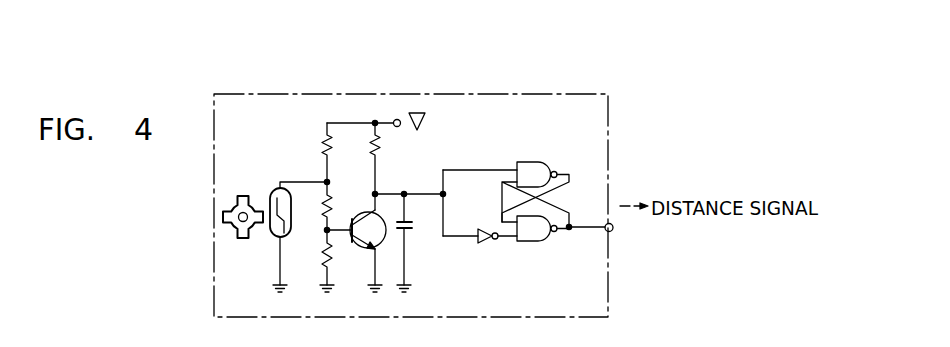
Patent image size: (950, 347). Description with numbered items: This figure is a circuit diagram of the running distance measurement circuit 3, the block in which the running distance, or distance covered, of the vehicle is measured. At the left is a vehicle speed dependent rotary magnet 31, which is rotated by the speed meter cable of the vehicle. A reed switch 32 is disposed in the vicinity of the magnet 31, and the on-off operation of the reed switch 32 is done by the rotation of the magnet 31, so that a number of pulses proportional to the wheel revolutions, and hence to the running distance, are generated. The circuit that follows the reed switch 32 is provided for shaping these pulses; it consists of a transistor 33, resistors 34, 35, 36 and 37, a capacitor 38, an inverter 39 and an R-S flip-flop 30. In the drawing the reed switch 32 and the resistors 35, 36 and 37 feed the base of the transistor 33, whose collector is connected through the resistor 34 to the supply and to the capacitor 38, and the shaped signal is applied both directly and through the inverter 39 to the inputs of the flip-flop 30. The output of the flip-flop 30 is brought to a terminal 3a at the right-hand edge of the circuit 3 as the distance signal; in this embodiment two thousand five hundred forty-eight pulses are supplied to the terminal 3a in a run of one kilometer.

The running distance measurement circuit 3 is at (525, 93).
The terminal 3a is at (614, 228).
The R-S flip-flop 30 is at (568, 202).
The magnet 31 is at (234, 201).
The reed switch 32 is at (274, 188).
The transistor 33 is at (362, 248).
The resistor 34 is at (382, 143).
The resistor 35 is at (322, 145).
The resistor 36 is at (332, 206).
The resistor 37 is at (318, 253).
The capacitor 38 is at (413, 228).
The inverter 39 is at (492, 244).